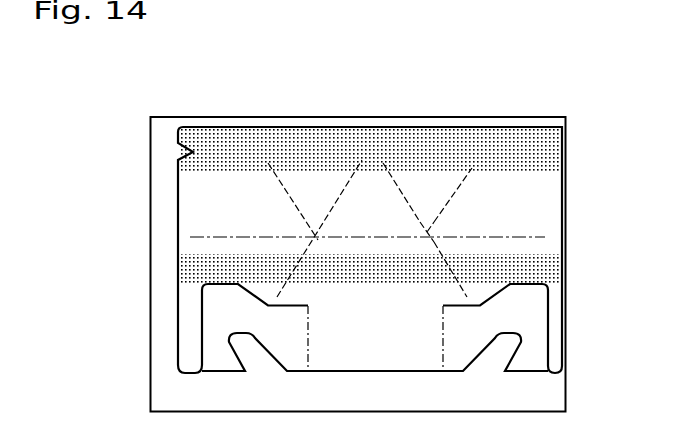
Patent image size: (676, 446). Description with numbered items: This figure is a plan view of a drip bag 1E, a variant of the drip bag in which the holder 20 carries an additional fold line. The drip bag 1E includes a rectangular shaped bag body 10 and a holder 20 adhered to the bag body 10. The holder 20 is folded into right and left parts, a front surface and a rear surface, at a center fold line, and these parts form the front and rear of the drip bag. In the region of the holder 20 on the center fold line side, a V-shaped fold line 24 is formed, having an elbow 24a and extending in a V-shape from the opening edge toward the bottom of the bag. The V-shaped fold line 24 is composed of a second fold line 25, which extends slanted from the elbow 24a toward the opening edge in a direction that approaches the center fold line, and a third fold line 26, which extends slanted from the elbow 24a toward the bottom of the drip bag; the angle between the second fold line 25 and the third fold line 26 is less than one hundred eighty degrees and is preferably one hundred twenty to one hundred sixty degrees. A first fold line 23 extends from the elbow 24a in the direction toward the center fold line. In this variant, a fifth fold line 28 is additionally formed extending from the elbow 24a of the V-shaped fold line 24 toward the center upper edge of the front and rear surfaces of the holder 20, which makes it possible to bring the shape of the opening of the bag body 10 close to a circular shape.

The drip bag 1E is at (127, 153).
The bag body 10 is at (165, 315).
The holder 20 is at (190, 210).
The first fold line 23 is at (546, 236).
The V-shaped fold line 24 is at (487, 88).
The elbow 24a is at (427, 232).
The second fold line 25 is at (443, 203).
The third fold line 26 is at (457, 257).
The fifth fold line 28 is at (396, 180).